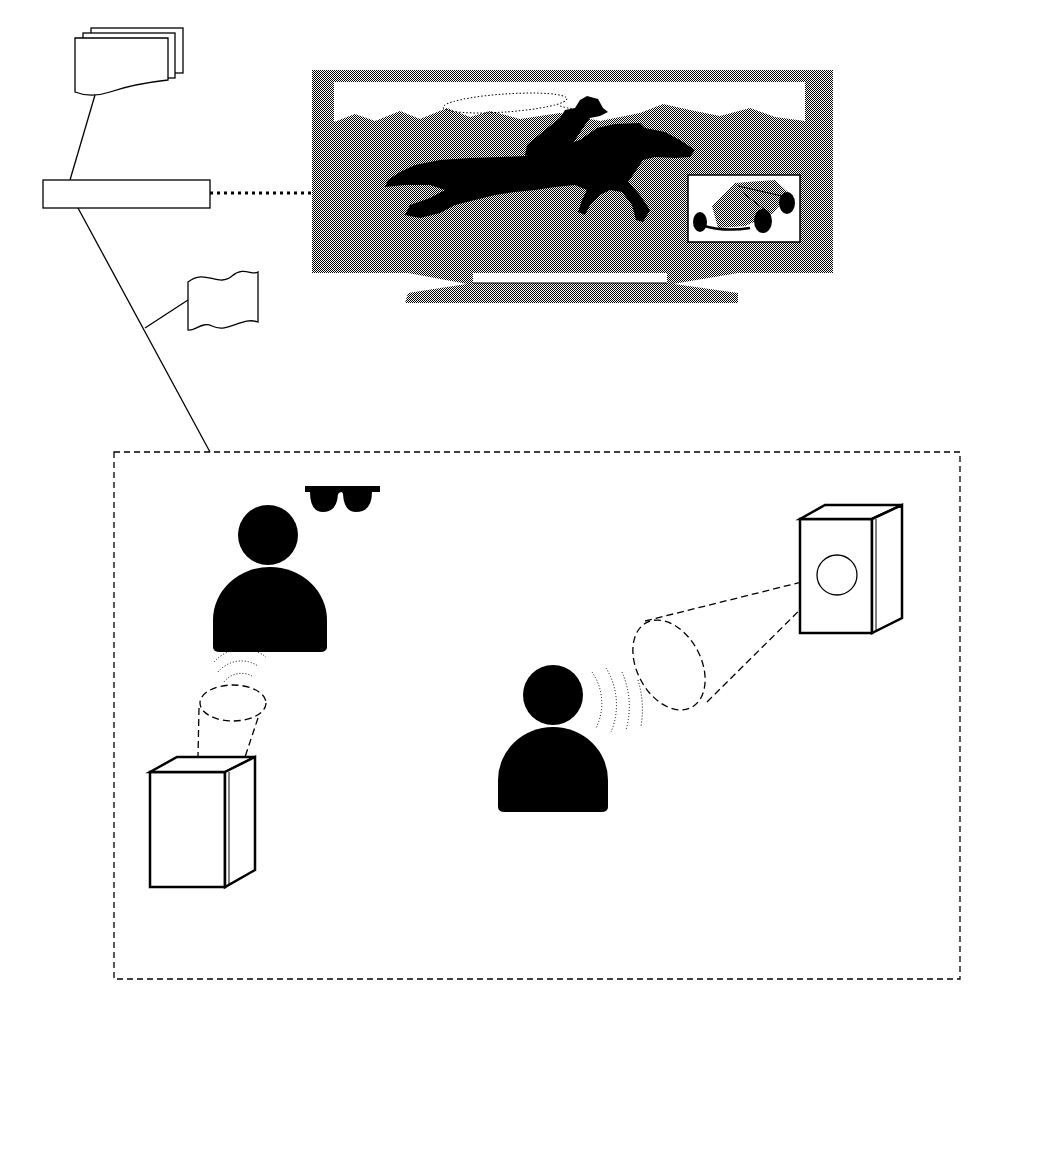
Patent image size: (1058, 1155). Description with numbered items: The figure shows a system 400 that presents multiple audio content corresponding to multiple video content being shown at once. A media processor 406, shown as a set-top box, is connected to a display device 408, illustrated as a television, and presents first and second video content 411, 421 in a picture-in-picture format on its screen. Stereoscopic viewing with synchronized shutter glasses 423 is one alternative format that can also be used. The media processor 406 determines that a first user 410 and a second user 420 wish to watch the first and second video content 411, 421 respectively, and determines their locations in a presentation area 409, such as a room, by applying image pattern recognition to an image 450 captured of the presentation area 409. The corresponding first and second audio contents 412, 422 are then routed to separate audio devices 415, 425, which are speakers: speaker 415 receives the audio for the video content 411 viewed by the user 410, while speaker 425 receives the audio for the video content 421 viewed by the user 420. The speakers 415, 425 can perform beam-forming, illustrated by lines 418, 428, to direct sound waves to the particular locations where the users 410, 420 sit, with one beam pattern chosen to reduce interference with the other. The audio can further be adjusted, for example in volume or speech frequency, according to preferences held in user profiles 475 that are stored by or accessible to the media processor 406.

The system 400 is at (501, 571).
The media processor 406 is at (177, 316).
The display device 408 is at (830, 150).
The presentation area 409 is at (890, 979).
The first user 410 is at (610, 797).
The first video content 411 is at (385, 100).
The first audio content 412 is at (600, 665).
The first audio device 415 is at (892, 603).
The beam-forming lines 418 is at (758, 655).
The second user 420 is at (228, 590).
The second video content 421 is at (788, 233).
The second audio content 422 is at (218, 660).
The shutter glasses 423 is at (345, 483).
The second audio device 425 is at (243, 848).
The beam-forming lines 428 is at (260, 727).
The image 450 is at (201, 300).
The user profiles 475 is at (126, 104).